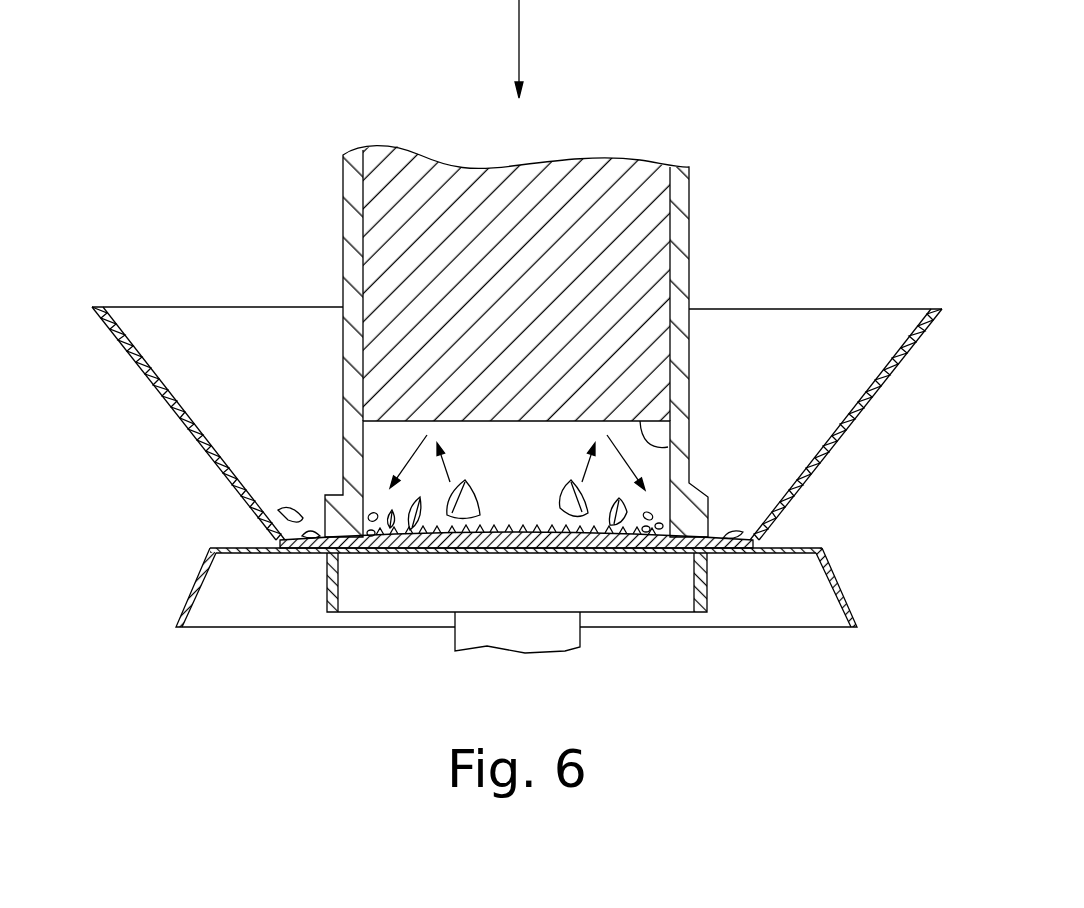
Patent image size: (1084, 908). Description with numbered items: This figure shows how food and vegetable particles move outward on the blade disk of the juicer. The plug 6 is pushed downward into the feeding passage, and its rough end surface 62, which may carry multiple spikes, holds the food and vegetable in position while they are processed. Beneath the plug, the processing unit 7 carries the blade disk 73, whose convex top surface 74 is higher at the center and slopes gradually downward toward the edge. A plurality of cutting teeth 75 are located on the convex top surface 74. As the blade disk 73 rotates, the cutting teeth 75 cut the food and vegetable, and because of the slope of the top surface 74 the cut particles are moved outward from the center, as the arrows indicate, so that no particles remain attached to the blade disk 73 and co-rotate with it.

The plug 6 is at (433, 183).
The rough end surface 62 is at (670, 447).
The processing unit 7 is at (152, 504).
The blade disk 73 is at (678, 550).
The convex top surface 74 is at (492, 517).
The cutting teeth 75 is at (577, 553).